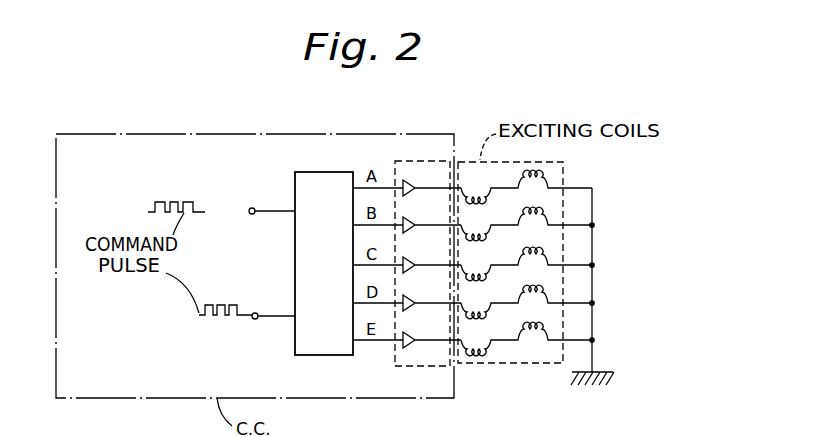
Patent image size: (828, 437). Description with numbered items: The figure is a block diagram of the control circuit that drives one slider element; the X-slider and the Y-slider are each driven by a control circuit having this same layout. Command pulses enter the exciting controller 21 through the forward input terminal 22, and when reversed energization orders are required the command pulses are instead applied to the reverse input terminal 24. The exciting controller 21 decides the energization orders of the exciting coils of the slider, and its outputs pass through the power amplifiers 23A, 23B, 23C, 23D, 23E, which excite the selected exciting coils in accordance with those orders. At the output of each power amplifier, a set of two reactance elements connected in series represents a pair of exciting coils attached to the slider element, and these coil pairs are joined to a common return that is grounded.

The exciting controller 21 is at (324, 263).
The forward input terminal 22 is at (252, 214).
The power amplifier 23A is at (407, 180).
The power amplifier 23B is at (407, 217).
The power amplifier 23C is at (407, 257).
The power amplifier 23D is at (407, 295).
The power amplifier 23E is at (407, 332).
The reverse input terminal 24 is at (253, 312).